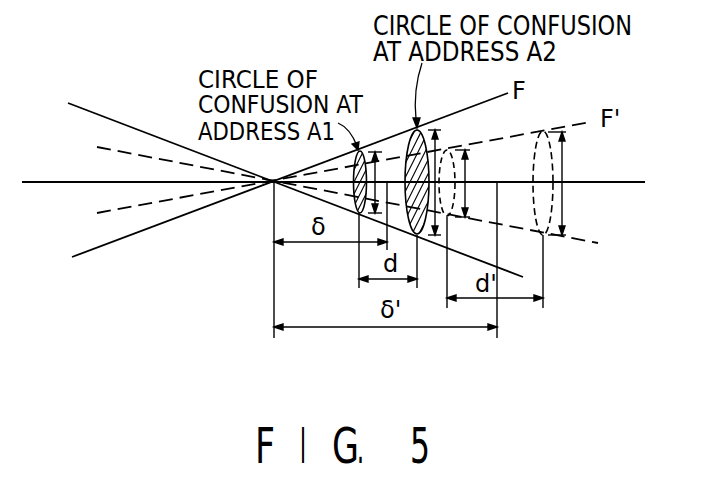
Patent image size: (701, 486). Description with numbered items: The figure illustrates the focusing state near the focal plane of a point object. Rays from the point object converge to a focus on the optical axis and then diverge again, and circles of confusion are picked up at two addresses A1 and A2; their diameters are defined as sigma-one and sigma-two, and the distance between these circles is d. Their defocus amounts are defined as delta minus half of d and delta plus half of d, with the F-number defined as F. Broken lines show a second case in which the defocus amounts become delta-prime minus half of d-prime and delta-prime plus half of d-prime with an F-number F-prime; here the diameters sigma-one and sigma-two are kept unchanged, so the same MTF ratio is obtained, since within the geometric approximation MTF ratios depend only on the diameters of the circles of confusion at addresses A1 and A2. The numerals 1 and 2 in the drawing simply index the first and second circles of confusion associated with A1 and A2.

The circle of confusion at address A1 (diameter σ1) 1 is at (382, 168).
The circle of confusion at address A2 (diameter σ2) 2 is at (430, 130).
The address A1 is at (466, 183).
The address A2 is at (567, 183).